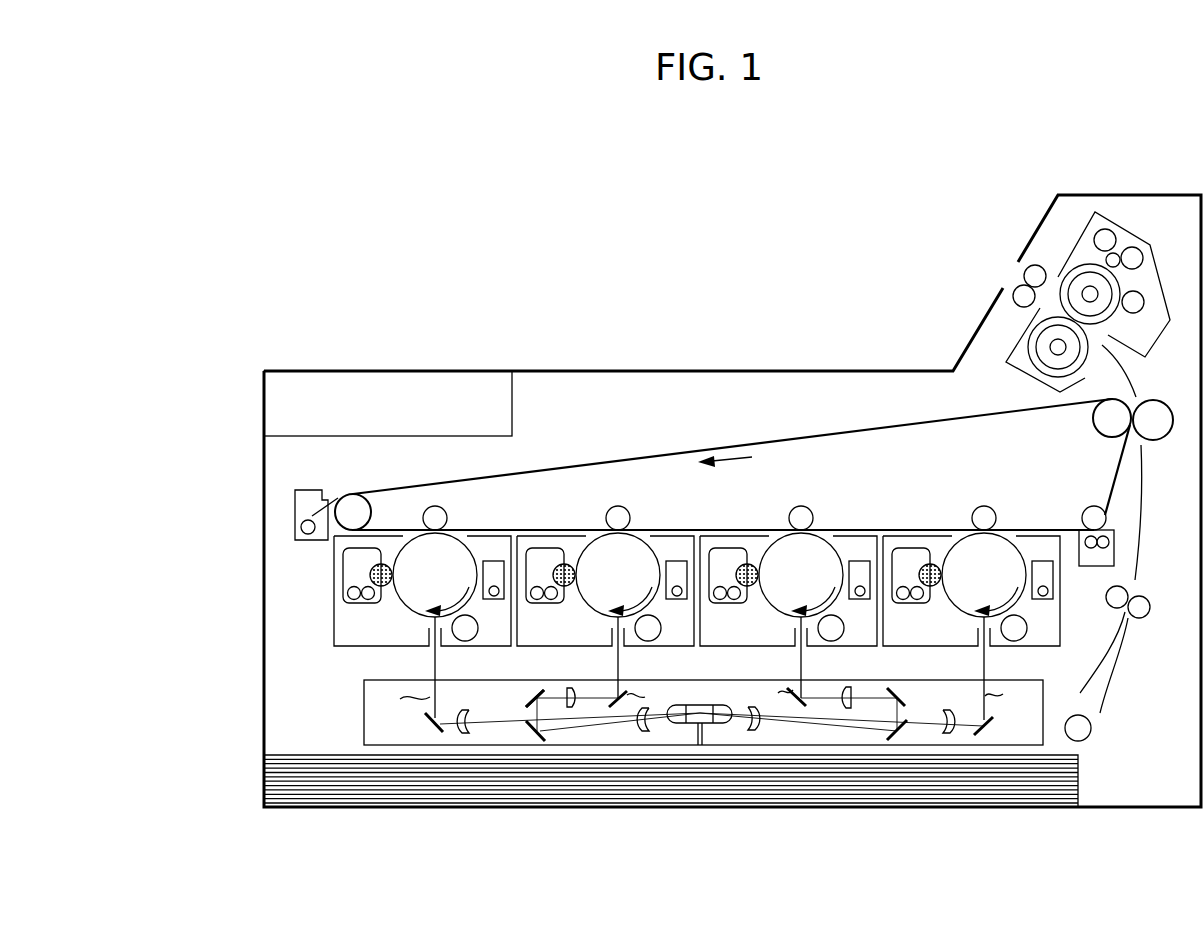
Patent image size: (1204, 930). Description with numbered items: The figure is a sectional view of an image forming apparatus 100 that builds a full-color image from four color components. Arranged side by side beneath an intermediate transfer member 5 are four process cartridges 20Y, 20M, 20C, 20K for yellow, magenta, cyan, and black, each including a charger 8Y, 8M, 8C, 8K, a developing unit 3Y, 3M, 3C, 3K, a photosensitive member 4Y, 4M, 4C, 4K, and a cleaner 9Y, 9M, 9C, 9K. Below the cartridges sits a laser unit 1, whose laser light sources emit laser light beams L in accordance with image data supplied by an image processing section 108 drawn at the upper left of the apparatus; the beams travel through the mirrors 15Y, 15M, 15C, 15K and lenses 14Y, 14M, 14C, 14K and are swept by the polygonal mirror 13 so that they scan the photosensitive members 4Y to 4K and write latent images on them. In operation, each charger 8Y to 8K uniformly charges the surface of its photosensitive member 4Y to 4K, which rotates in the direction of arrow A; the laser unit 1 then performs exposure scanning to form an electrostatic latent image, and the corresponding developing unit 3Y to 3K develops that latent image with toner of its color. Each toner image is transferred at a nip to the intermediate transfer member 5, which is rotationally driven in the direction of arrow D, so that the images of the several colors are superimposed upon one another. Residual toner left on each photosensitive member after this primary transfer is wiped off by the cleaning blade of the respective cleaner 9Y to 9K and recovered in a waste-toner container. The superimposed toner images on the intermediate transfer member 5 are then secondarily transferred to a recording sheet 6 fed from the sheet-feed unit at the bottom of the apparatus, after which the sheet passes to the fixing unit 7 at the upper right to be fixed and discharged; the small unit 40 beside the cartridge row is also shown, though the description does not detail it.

The image forming apparatus 100 is at (263, 542).
The image processing section 108 is at (433, 380).
The intermediate transfer member 5 is at (600, 463).
The fixing device 7 is at (1147, 278).
The sensor unit 40 is at (1093, 556).
The recording sheet 6 is at (285, 788).
The laser unit 1 is at (364, 712).
The polygonal mirror 13 is at (700, 745).
The lens 14Y is at (468, 733).
The lens 14M is at (641, 731).
The lens 14C is at (756, 730).
The lens 14K is at (944, 733).
The mirror 15Y is at (425, 724).
The mirror 15M is at (524, 697).
The mirror 15C is at (905, 697).
The mirror 15K is at (987, 729).
The developing unit 3Y is at (362, 604).
The developing unit 3M is at (550, 597).
The developing unit 3C is at (733, 597).
The developing unit 3K is at (916, 597).
The photosensitive member 4Y is at (423, 551).
The photosensitive member 4M is at (613, 559).
The photosensitive member 4C is at (796, 559).
The photosensitive member 4K is at (979, 559).
The charger 8Y is at (465, 615).
The charger 8M is at (650, 564).
The charger 8C is at (832, 564).
The charger 8K is at (1015, 564).
The cleaner 9Y is at (494, 560).
The cleaner 9M is at (681, 545).
The cleaner 9C is at (863, 545).
The cleaner 9K is at (1046, 545).
The process cartridge 20Y is at (409, 647).
The process cartridge 20M is at (605, 592).
The process cartridge 20C is at (788, 592).
The process cartridge 20K is at (971, 592).